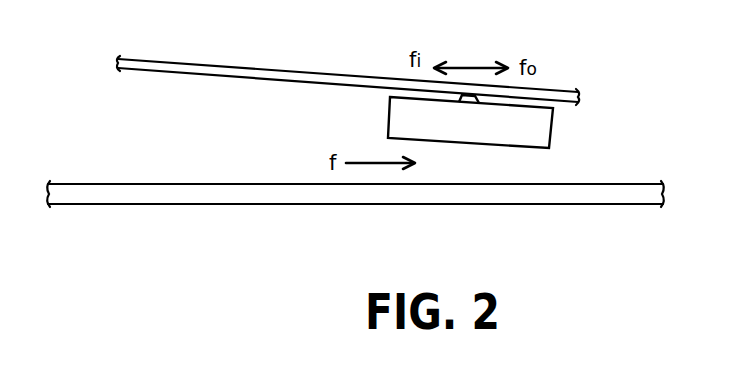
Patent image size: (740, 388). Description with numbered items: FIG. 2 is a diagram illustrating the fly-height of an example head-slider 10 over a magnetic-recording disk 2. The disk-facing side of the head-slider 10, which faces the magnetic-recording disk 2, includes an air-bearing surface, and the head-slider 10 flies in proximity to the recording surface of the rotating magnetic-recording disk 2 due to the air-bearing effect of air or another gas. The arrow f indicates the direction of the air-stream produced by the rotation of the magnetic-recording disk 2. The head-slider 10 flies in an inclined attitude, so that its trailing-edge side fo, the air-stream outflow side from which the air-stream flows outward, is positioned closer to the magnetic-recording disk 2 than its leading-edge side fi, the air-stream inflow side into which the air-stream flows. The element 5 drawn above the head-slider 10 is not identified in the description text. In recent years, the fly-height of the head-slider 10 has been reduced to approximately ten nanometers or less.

The magnetic-recording disk 2 is at (126, 204).
The guide plate 5 is at (243, 73).
The head-slider 10 is at (535, 125).